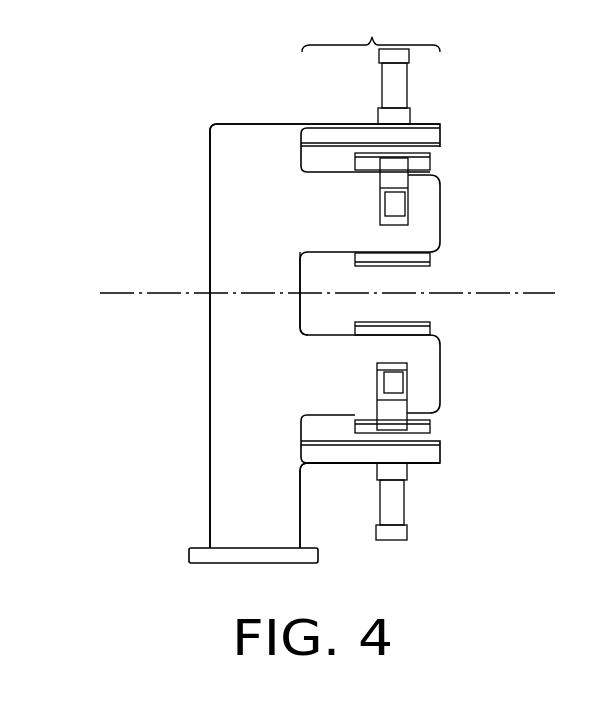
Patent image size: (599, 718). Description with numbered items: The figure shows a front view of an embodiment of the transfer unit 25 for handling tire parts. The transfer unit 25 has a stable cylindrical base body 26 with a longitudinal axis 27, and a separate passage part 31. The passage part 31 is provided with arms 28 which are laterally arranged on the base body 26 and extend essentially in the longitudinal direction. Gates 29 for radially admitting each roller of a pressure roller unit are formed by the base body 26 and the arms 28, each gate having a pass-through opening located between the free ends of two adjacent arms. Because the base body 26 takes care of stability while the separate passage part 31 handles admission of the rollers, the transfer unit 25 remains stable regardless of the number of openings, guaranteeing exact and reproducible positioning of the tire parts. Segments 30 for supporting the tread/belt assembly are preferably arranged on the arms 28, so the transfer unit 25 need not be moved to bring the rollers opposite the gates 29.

The transfer unit 25 is at (183, 106).
The base body 26 is at (269, 375).
The longitudinal axis 27 is at (120, 293).
The arms 28 is at (428, 123).
The gates 29 is at (432, 148).
The segments 30 is at (437, 418).
The passage part 31 is at (346, 35).